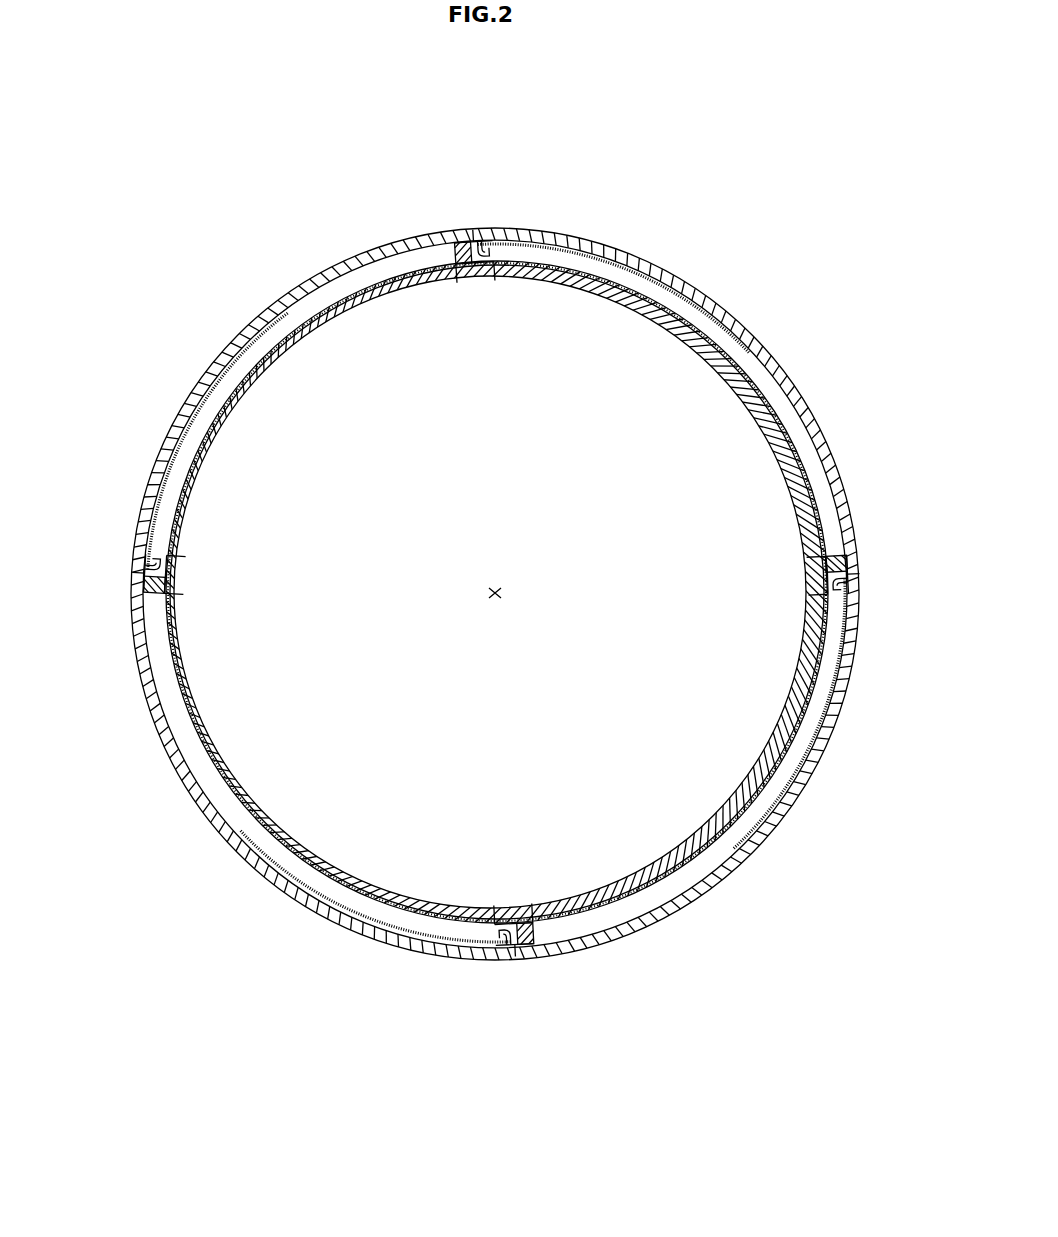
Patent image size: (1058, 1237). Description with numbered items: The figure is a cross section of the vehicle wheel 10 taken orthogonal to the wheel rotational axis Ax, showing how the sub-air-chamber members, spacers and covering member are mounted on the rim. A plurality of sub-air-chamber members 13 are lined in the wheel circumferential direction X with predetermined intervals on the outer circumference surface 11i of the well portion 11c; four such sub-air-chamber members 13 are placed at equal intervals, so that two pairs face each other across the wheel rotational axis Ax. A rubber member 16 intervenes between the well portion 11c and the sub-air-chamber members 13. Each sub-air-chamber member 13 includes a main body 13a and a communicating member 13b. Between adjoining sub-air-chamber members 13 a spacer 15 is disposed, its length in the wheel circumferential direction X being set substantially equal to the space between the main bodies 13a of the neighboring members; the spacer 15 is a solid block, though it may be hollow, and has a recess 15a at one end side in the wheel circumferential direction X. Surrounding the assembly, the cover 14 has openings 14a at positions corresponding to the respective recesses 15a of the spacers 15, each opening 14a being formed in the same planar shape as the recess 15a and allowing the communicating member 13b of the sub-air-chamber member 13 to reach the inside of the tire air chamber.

The vehicle wheel 10 is at (506, 145).
The well portion 11c is at (242, 797).
The outer circumference surface of the well portion 11i is at (172, 518).
The sub-air-chamber member 13 is at (490, 614).
The main body 13a is at (540, 222).
The communicating member 13b is at (484, 240).
The cover 14 is at (285, 297).
The opening 14a is at (479, 218).
The spacer 15 is at (478, 283).
The recess 15a is at (494, 276).
The rubber member 16 is at (402, 900).
The wheel circumferential direction X is at (427, 365).
The wheel rotational axis Ax is at (500, 588).